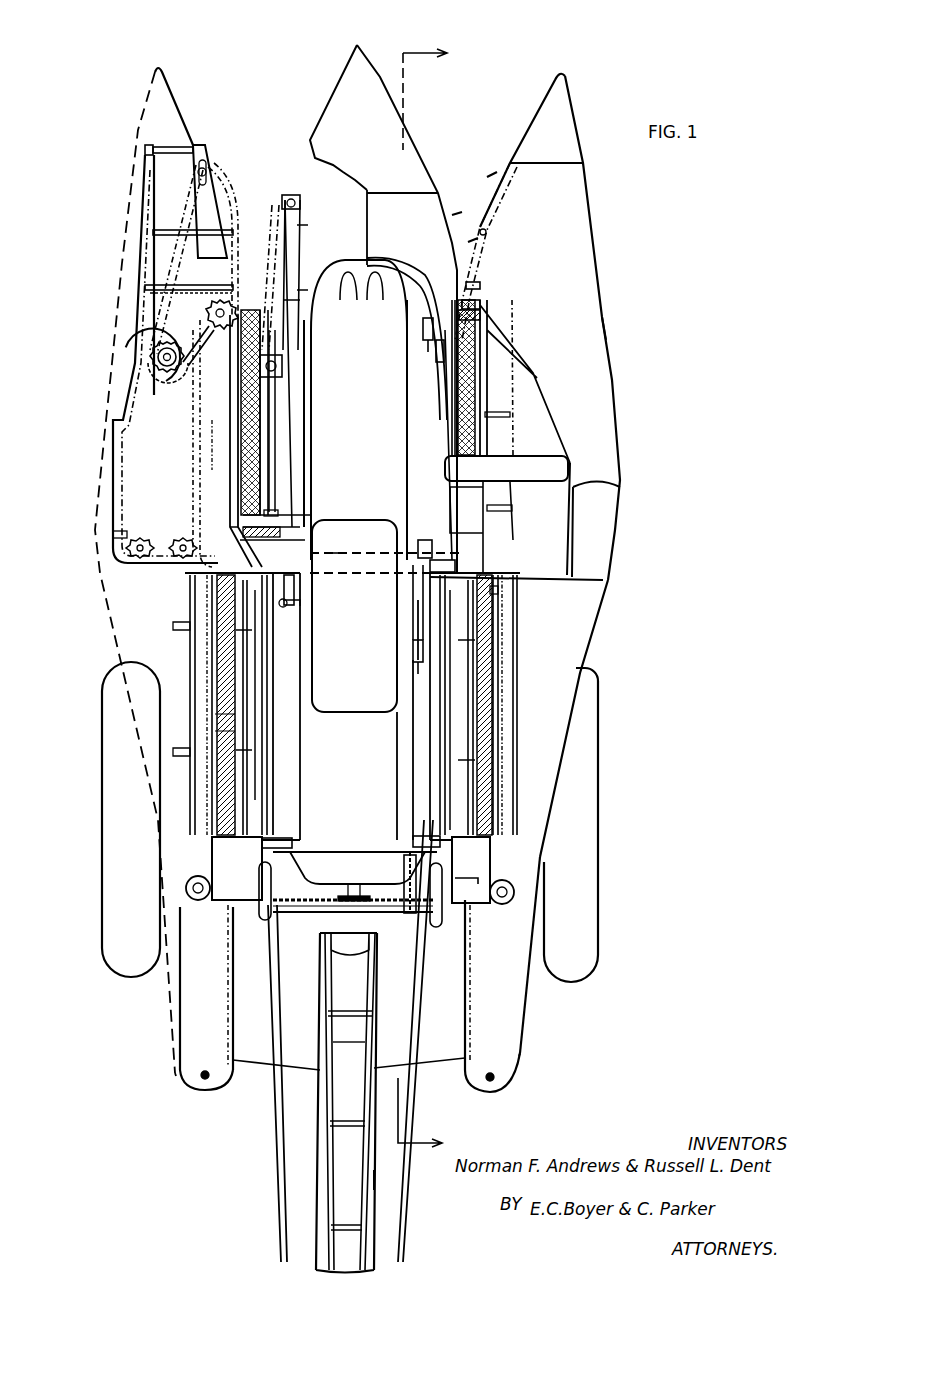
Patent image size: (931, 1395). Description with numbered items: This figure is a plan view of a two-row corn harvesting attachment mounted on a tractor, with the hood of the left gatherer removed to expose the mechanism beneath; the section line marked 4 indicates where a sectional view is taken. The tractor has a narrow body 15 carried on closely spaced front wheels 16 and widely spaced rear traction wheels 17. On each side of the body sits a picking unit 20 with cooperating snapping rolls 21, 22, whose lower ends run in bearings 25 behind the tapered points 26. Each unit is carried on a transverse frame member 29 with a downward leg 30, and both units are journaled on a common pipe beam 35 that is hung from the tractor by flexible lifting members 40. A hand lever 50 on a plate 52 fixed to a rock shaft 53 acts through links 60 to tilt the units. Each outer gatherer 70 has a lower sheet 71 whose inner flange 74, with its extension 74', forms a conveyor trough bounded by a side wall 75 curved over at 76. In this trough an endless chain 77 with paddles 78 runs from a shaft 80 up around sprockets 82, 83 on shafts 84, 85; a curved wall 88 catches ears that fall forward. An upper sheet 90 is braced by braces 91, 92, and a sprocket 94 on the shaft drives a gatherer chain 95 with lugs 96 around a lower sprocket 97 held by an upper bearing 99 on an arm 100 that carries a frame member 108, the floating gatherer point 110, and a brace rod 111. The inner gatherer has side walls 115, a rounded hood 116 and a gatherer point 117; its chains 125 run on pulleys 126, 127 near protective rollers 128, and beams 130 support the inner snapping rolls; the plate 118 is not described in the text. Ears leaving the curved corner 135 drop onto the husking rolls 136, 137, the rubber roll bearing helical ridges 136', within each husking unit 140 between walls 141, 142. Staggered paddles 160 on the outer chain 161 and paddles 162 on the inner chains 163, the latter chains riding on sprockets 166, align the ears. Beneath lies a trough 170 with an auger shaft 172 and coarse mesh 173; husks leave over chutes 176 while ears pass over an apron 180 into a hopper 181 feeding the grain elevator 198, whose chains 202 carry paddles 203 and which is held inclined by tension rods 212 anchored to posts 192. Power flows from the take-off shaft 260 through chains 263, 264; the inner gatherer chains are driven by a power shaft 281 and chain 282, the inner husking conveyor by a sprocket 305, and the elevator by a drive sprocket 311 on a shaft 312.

The section line 4- 4 is at (422, 588).
The tractor body 15 is at (337, 467).
The front wheels 16 is at (378, 293).
The rear traction wheels 17 is at (580, 836).
The picking unit 20 is at (633, 399).
The outer snapping roll 21 is at (242, 397).
The inner snapping roll 22 is at (272, 411).
The bearing 25 is at (475, 305).
The tapered point 26 is at (478, 287).
The frame member 29 is at (427, 546).
The leg 30 is at (458, 573).
The supporting beam 35 is at (355, 560).
The lifting members 40 is at (315, 541).
The hand lever 50 is at (412, 667).
The plate 52 is at (290, 609).
The rock shaft 53 is at (296, 605).
The link 60 is at (292, 585).
The outer gatherer 70 is at (510, 136).
The lower sheet 71 is at (112, 455).
The flange 74 is at (363, 433).
The flange extension 74' is at (499, 527).
The side wall 75 is at (570, 516).
The curved portion 76 is at (606, 316).
The conveyor chain 77 is at (198, 439).
The paddles 78 is at (122, 424).
The shaft 80 is at (148, 340).
The sprocket 82 is at (125, 536).
The sprocket 83 is at (240, 563).
The shaft 84 is at (142, 538).
The shaft 85 is at (183, 538).
The sheet metal wall 88 is at (150, 352).
The upper sheet 90 is at (178, 313).
The brace 91 is at (175, 297).
The brace 92 is at (160, 394).
The sprocket 94 is at (152, 362).
The gatherer chain 95 is at (172, 210).
The lugs 96 is at (160, 270).
The lower sprocket 97 is at (212, 172).
The upper bearing 99 is at (222, 160).
The arm 100 is at (212, 208).
The frame member 108 is at (185, 147).
The floating gatherer point 110 is at (560, 96).
The brace rod 111 is at (150, 224).
The side walls 115 is at (440, 360).
The hood 116 is at (385, 232).
The floating gatherer point 117 is at (344, 113).
The support plate 118 is at (524, 477).
The inner gatherer chains 125 is at (272, 212).
The pulley 126 is at (300, 203).
The pulley 127 is at (300, 360).
The rollers 128 is at (422, 326).
The sheet metal beams 130 is at (283, 446).
The curved inner rear corner 135 is at (225, 577).
The husking roll 136 is at (349, 705).
The helical ridges 136' is at (354, 671).
The husking roll 137 is at (245, 676).
The husking unit 140 is at (606, 643).
The side wall 141 is at (565, 724).
The side wall 142 is at (437, 721).
The paddles 160 is at (215, 695).
The outer conveyor chain 161 is at (215, 757).
The paddles 162 is at (463, 876).
The inner conveyor chains 163 is at (275, 781).
The sprockets 166 is at (515, 890).
The trough 170 is at (537, 994).
The shaft 172 is at (490, 1083).
The coarsely perforated mesh 173 is at (465, 972).
The chutes 176 is at (505, 1088).
The apron 180 is at (450, 899).
The hopper 181 is at (382, 989).
The posts 192 is at (288, 833).
The grain elevator 198 is at (388, 1186).
The endless chains 202 is at (325, 982).
The conveyor paddles 203 is at (358, 1042).
The tension rods 212 is at (410, 1086).
The power take-off shaft 260 is at (333, 896).
The chain 263 is at (310, 906).
The chain 264 is at (385, 913).
The power shaft 281 is at (272, 485).
The chain 282 is at (285, 526).
The sprocket 305 is at (458, 928).
The drive sprocket 311 is at (405, 847).
The shaft 312 is at (405, 862).